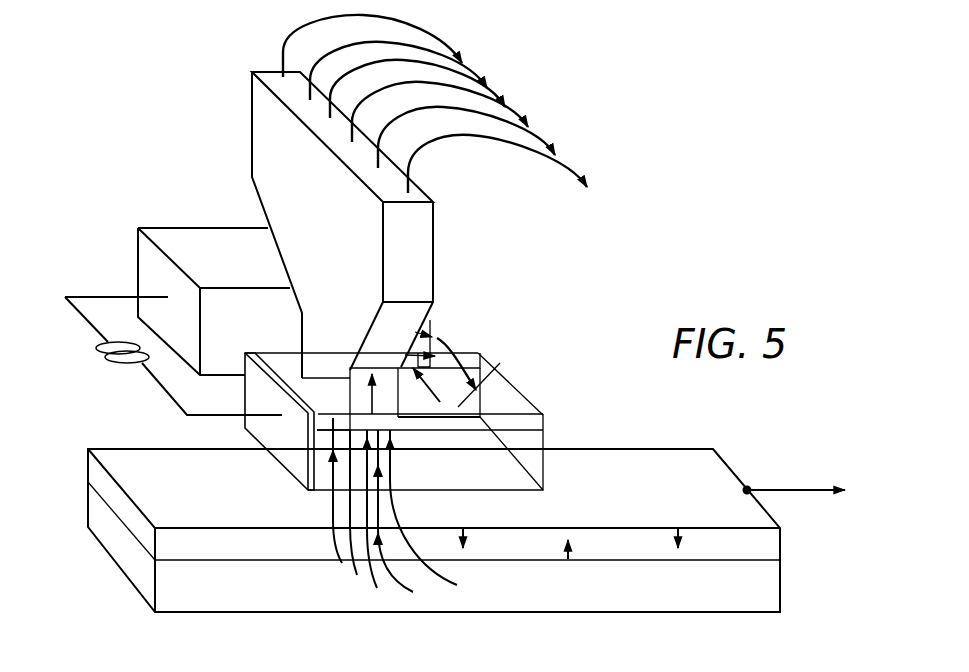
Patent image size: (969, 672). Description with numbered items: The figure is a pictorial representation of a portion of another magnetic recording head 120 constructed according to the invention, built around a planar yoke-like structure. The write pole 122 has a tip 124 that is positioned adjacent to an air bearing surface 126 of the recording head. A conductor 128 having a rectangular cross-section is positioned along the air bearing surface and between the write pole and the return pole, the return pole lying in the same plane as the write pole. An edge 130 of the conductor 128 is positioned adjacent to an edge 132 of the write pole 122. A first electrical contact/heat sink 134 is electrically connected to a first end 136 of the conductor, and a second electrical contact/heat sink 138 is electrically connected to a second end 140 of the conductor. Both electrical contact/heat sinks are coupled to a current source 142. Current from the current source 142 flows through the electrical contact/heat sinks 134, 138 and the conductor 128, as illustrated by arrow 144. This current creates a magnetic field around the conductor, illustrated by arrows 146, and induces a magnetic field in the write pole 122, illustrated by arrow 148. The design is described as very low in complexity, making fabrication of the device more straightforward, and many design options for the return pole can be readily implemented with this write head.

The magnetic recording head 120 is at (530, 280).
The write pole 122 is at (346, 273).
The tip 124 is at (307, 392).
The air bearing surface 126 is at (360, 431).
The conductor 128 is at (470, 404).
The edge of the conductor 130 is at (398, 418).
The edge of the write pole 132 is at (391, 418).
The first electrical contact/heat sink 134 is at (173, 235).
The first end of the conductor 136 is at (450, 348).
The second electrical contact/heat sink 138 is at (538, 462).
The second end of the conductor 140 is at (482, 429).
The current source 142 is at (118, 368).
The arrow 144 is at (458, 407).
The arrows 146 is at (442, 336).
The arrow 148 is at (349, 399).